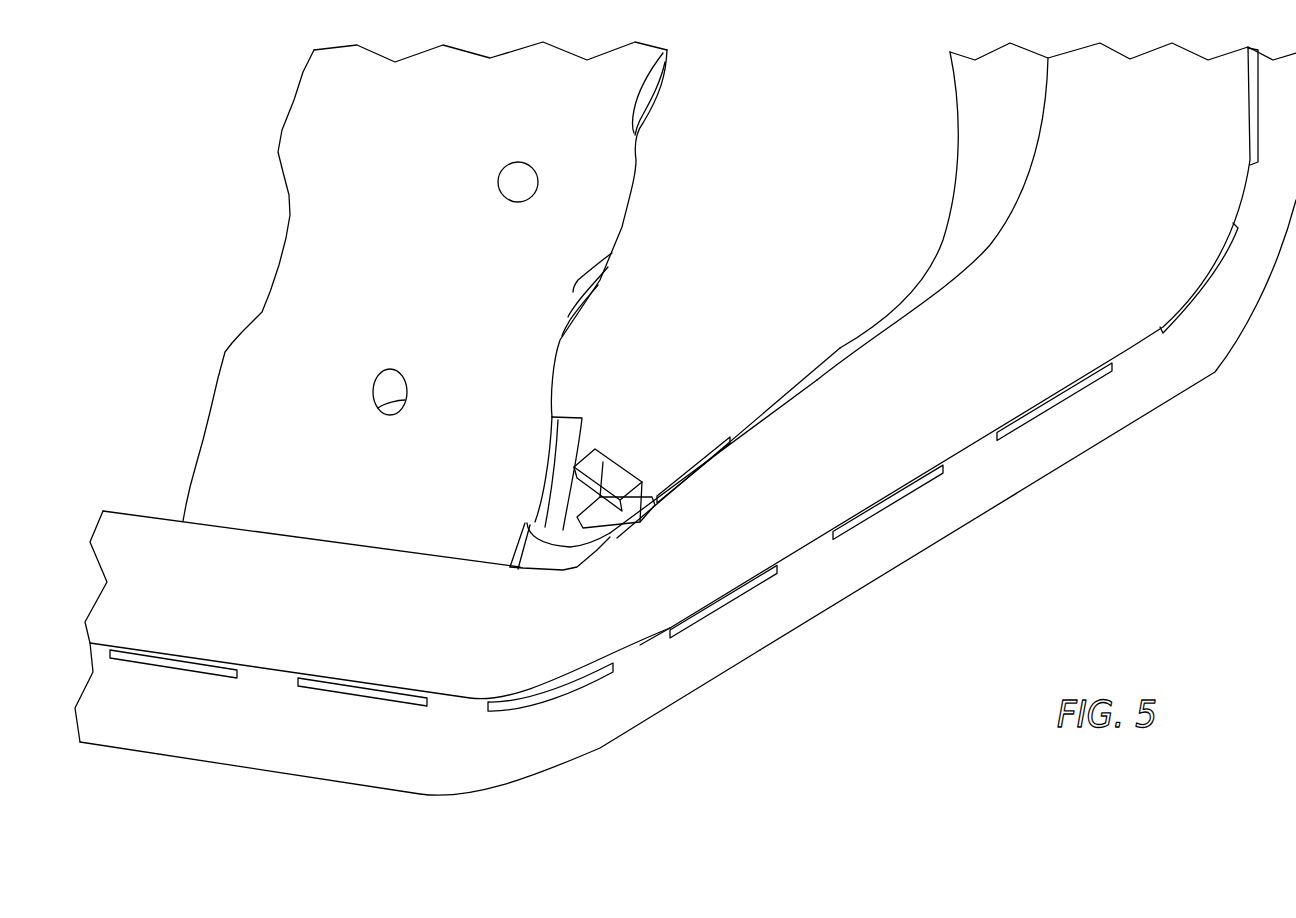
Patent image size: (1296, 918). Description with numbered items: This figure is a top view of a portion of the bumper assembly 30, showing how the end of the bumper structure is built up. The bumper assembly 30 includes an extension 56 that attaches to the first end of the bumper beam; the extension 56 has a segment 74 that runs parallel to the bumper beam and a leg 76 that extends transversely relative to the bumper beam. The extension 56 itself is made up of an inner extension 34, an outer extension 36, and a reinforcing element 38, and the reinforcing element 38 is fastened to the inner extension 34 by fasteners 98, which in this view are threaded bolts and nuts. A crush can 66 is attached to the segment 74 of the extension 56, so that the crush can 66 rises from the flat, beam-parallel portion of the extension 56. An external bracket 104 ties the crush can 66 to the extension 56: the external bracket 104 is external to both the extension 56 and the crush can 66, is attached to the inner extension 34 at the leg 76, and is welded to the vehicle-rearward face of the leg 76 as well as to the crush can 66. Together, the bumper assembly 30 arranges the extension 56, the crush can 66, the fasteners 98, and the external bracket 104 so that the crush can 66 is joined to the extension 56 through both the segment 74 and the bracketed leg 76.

The bumper assembly 30 is at (798, 732).
The inner extension 34 is at (775, 398).
The outer extension 36 is at (940, 545).
The reinforcing element 38 is at (627, 617).
The extension 56 is at (1040, 500).
The crush can 66 is at (637, 173).
The segment 74 is at (245, 766).
The leg 76 is at (863, 592).
The fasteners 98 is at (607, 482).
The external bracket 104 is at (675, 463).